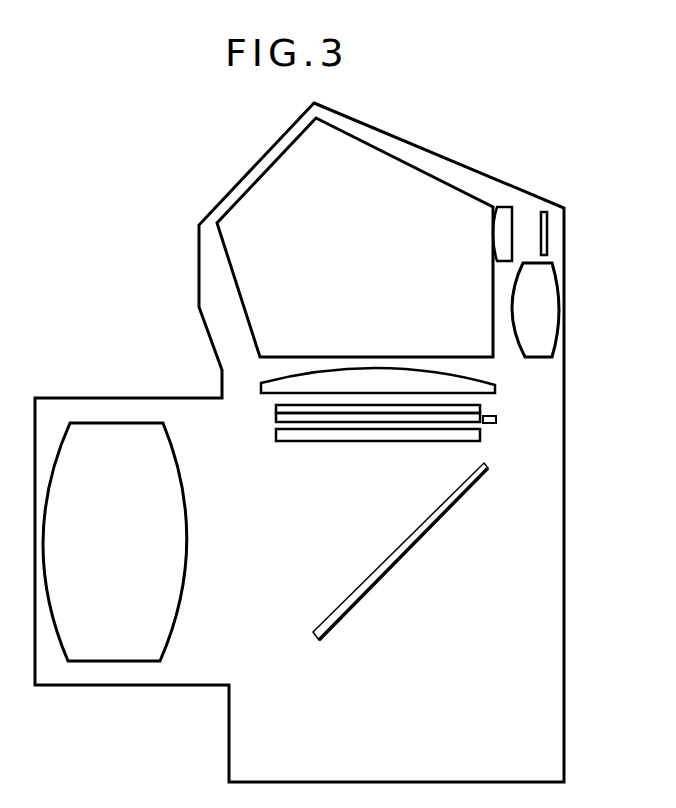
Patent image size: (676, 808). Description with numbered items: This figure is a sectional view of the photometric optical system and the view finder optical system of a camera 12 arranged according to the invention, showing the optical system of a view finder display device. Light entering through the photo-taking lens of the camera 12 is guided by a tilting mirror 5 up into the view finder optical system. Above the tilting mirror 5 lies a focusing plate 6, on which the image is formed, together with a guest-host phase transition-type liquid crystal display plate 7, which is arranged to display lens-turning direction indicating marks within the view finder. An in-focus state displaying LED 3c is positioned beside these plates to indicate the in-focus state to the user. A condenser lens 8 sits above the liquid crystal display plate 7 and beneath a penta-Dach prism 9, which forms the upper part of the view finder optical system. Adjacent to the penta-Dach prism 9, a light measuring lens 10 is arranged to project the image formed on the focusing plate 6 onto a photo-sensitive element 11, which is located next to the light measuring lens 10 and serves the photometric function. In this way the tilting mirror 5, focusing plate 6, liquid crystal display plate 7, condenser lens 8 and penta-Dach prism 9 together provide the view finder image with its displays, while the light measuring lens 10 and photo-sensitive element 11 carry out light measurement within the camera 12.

The camera 12 is at (566, 540).
The penta-Dach prism 9 is at (395, 154).
The light measuring lens 10 is at (505, 207).
The photo-sensitive element 11 is at (550, 217).
The condenser lens 8 is at (498, 387).
The guest-host phase transition-type liquid crystal display plate 7 is at (484, 407).
The in-focus state displaying LED 3c is at (497, 420).
The focusing plate 6 is at (482, 441).
The tilting mirror 5 is at (455, 505).